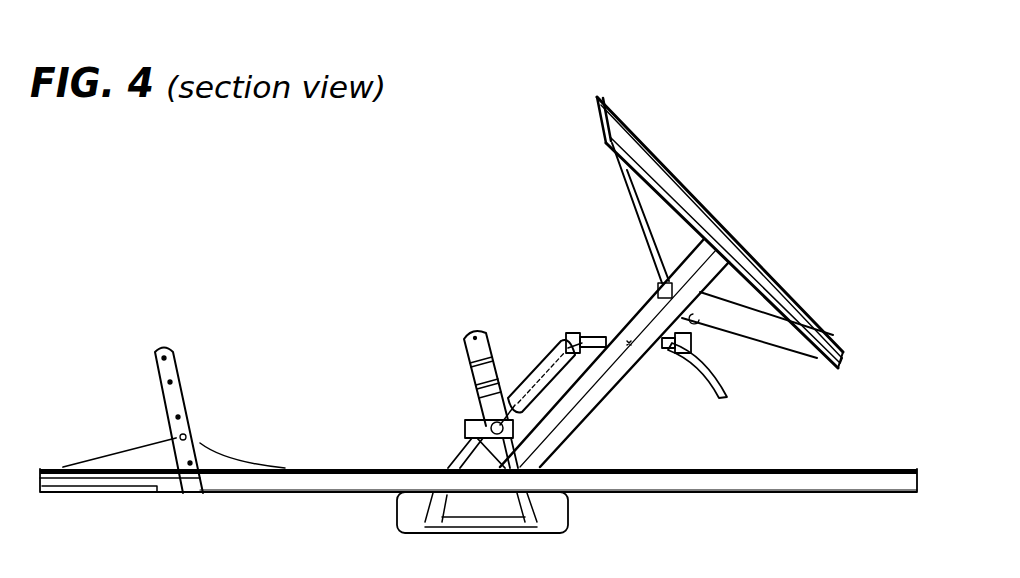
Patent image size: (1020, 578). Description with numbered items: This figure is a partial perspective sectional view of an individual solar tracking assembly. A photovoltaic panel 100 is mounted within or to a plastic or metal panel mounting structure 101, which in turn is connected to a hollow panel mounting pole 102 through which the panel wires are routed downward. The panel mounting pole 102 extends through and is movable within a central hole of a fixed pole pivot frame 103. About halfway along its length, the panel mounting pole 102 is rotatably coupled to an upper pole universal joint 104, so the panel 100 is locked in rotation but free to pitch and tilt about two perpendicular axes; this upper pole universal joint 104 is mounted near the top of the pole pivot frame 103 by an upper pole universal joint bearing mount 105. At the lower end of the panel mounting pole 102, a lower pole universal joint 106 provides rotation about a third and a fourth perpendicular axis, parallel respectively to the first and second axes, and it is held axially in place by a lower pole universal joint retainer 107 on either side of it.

The photovoltaic panel 100 is at (697, 193).
The panel mounting structure 101 is at (642, 218).
The panel mounting pole 102 is at (658, 303).
The pole pivot frame 103 is at (543, 362).
The upper pole universal joint 104 is at (602, 323).
The upper pole universal joint bearing mount 105 is at (745, 352).
The lower pole universal joint 106 is at (467, 430).
The lower pole universal joint retainer 107 is at (458, 467).